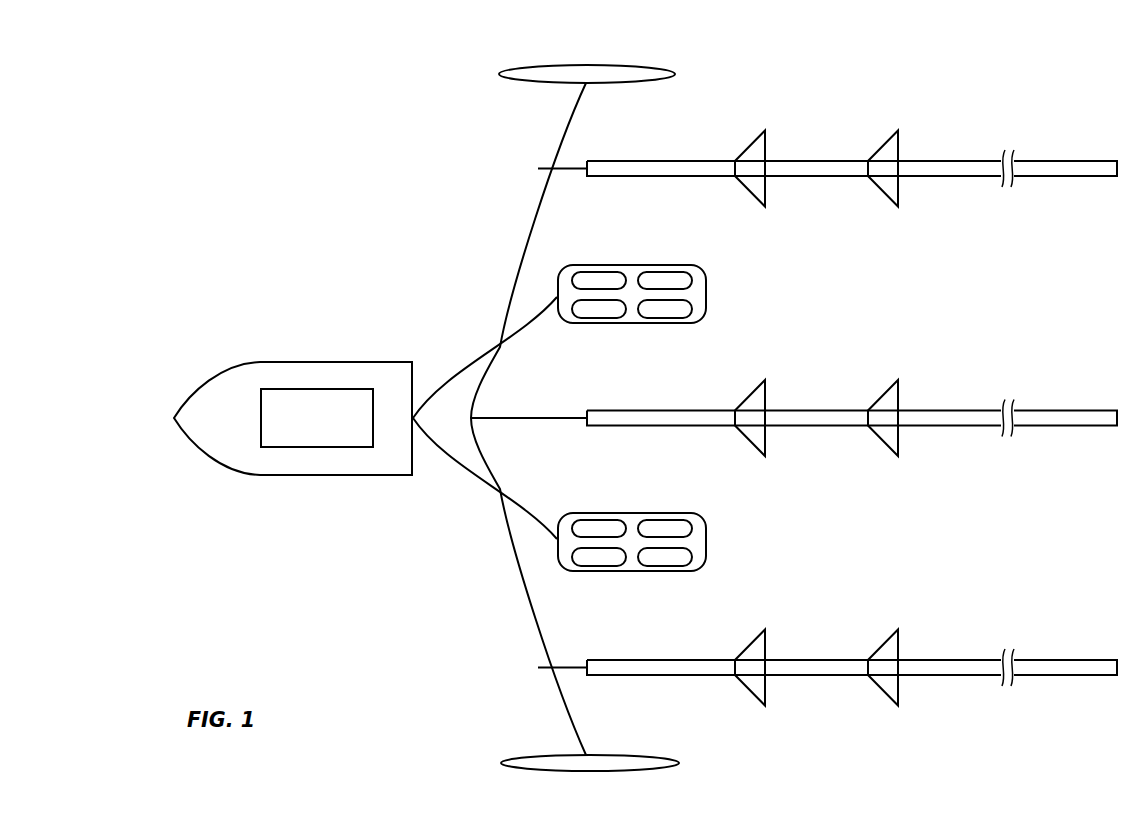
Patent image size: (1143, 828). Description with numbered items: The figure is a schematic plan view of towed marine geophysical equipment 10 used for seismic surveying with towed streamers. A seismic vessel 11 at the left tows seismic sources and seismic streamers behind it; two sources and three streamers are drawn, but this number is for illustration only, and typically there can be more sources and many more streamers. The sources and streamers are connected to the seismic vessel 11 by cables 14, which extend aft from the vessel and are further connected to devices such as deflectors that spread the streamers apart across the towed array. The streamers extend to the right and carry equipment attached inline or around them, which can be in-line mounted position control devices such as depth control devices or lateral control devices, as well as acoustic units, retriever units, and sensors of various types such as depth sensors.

The towed marine geophysical equipment 10 is at (333, 187).
The seismic vessel 11 is at (213, 378).
The cable 14 is at (502, 308).